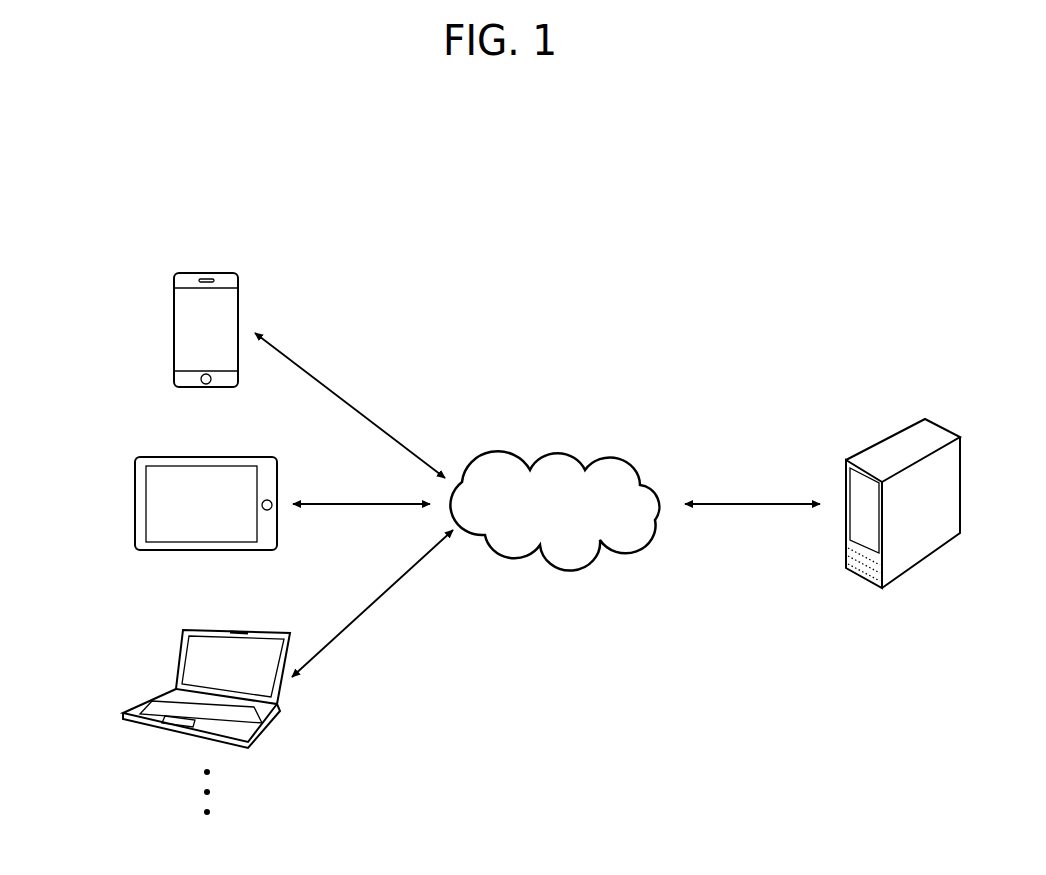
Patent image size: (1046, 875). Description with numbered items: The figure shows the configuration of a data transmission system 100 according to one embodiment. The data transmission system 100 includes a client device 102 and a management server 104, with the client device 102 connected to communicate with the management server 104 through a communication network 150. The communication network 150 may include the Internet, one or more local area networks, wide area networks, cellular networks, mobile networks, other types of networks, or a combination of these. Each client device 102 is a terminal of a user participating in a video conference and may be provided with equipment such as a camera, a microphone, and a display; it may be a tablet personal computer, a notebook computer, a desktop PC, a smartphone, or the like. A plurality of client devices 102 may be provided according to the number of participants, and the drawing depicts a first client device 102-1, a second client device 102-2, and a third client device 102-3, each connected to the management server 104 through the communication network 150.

The data transmission system 100 is at (89, 186).
The client device 102 is at (142, 414).
The first client device 102-1 is at (238, 297).
The second client device 102-2 is at (277, 518).
The third client device 102-3 is at (273, 687).
The communication network 150 is at (548, 455).
The management server 104 is at (895, 445).